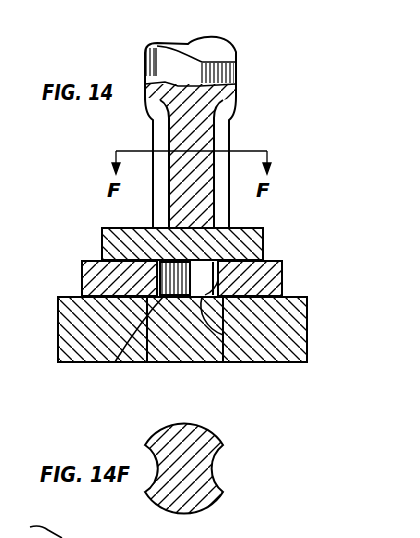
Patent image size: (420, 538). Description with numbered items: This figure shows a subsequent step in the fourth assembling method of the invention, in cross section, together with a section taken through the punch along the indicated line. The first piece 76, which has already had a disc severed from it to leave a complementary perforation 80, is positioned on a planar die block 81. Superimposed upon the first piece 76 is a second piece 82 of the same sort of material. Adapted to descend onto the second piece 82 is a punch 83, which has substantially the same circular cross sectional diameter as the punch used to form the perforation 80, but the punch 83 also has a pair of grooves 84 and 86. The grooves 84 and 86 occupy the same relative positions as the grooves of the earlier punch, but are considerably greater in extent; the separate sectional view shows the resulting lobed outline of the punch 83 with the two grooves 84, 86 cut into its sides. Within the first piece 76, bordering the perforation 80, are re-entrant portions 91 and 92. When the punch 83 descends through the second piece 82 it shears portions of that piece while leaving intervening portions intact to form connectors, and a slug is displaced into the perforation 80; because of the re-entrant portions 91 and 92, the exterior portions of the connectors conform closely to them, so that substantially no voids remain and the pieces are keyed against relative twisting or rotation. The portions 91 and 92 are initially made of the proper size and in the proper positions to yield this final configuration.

The first piece 76 is at (283, 292).
The perforation 80 is at (198, 280).
The planar die block 81 is at (290, 364).
The second piece 82 is at (102, 240).
The punch 83 is at (236, 97).
The groove 84 is at (157, 132).
The groove 86 is at (229, 134).
The re-entrant portion 91 is at (114, 363).
The re-entrant portion 92 is at (230, 364).